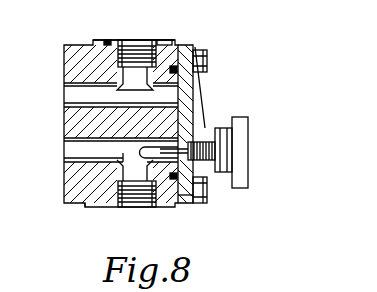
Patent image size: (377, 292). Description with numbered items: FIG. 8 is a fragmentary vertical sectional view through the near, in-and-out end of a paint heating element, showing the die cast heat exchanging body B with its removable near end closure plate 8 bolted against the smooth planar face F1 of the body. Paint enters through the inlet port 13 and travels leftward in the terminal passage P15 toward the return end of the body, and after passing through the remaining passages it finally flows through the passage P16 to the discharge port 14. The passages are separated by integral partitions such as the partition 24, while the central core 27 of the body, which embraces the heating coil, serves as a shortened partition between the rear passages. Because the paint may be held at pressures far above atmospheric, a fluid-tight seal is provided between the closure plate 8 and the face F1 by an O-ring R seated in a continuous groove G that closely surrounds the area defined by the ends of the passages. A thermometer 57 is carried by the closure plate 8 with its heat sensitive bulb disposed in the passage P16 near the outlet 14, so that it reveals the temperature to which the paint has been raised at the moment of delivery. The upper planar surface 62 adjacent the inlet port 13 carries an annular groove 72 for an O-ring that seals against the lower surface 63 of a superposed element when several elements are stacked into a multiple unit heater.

The near end closure plate 8 is at (193, 46).
The paint inlet port 13 is at (143, 42).
The outlet port 14 is at (133, 207).
The partition 24 is at (200, 94).
The central core 27 is at (63, 110).
The thermometer 57 is at (248, 141).
The upper planar surface 62 is at (108, 40).
The lower planar surface 63 is at (84, 206).
The annular groove 72 is at (112, 40).
The heat exchanging and heat transmitting body B is at (54, 136).
The face of the near end of the body F1 is at (182, 198).
The continuous groove G is at (173, 67).
The terminal passage P15 is at (83, 91).
The terminal passage P16 is at (62, 154).
The O-ring R is at (196, 75).